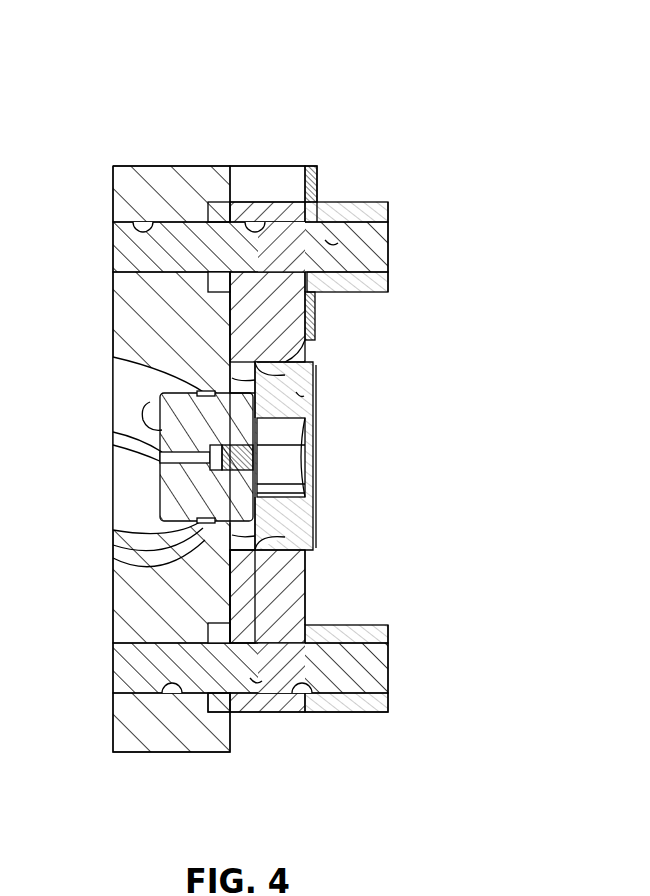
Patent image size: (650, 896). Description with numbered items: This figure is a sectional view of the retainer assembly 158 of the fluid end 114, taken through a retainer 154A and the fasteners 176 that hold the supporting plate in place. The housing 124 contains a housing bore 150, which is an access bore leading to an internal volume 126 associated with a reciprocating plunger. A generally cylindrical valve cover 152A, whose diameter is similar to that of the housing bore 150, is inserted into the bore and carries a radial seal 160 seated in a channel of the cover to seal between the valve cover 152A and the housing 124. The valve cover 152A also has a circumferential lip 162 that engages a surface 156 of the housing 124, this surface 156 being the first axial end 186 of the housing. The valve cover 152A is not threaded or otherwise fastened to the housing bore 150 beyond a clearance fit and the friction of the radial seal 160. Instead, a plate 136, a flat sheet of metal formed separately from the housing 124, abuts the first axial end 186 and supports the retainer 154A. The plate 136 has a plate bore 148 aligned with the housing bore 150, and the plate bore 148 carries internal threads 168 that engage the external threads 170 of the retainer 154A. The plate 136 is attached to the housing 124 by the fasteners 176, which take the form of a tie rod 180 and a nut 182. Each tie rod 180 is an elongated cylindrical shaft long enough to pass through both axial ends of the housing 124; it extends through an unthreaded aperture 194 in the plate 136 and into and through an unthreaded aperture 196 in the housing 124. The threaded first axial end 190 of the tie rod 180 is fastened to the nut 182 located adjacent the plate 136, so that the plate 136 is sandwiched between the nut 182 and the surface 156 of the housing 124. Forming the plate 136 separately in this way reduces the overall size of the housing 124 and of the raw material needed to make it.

The fluid end 114 is at (160, 82).
The housing 124 is at (122, 202).
The internal volume 126 is at (127, 385).
The plate 136 is at (283, 615).
The plate bore 148 is at (297, 357).
The housing bore 150 is at (150, 573).
The valve cover 152A is at (185, 420).
The retainer 154A is at (302, 400).
The surface 156 is at (262, 600).
The retainer assembly 158 is at (400, 453).
The radial seal 160 is at (215, 392).
The circumferential lip 162 is at (247, 527).
The internal threads 168 is at (312, 330).
The external threads 170 is at (300, 397).
The fasteners 176 is at (420, 213).
The tie rod 180 is at (330, 245).
The nut 182 is at (388, 283).
The first axial end 186 is at (232, 725).
The first axial end of the tie rod 190 is at (388, 247).
The aperture 194 is at (252, 232).
The aperture 196 is at (140, 235).